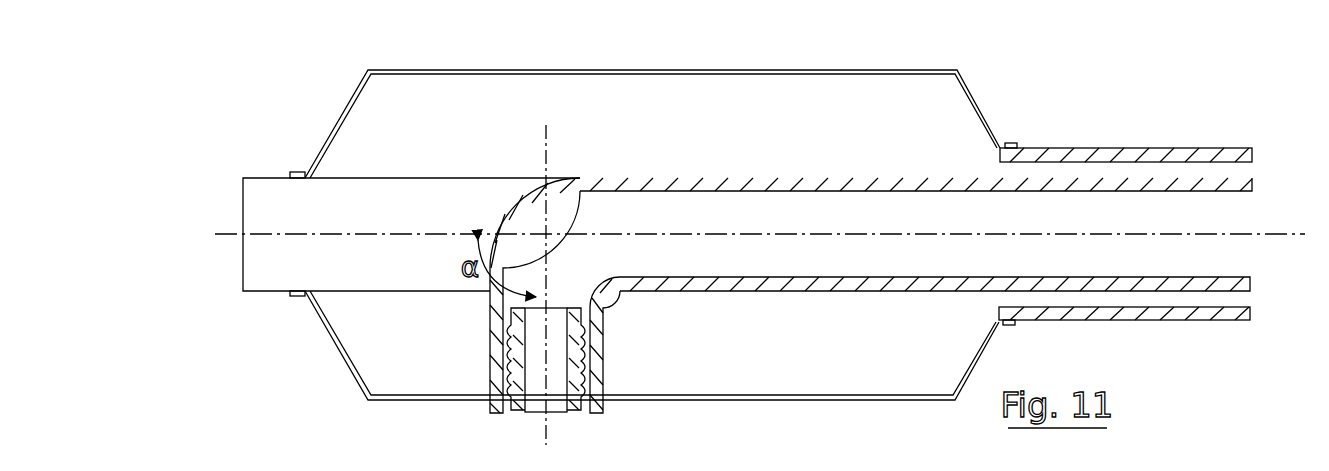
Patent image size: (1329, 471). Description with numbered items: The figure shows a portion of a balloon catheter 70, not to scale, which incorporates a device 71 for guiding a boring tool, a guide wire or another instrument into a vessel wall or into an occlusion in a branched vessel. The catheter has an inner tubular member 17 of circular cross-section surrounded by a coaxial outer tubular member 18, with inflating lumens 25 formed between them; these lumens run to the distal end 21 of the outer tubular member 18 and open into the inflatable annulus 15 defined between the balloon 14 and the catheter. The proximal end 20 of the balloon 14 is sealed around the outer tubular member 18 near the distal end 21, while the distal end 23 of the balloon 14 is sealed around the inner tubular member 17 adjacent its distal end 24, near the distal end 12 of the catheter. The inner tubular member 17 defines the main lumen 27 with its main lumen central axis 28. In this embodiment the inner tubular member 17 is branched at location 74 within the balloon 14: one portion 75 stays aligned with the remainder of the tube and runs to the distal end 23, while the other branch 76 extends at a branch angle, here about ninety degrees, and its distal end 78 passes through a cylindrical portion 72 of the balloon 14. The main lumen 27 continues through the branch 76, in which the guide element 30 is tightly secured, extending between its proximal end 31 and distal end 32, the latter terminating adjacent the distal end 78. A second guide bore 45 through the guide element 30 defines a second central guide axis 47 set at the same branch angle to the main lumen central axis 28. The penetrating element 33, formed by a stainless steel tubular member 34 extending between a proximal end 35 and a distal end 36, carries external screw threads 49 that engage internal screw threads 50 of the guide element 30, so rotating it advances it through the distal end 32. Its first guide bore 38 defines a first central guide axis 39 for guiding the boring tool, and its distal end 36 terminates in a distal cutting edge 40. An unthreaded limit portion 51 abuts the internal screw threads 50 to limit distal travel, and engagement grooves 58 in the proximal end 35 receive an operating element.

The distal end of catheter 12 is at (243, 212).
The inflatable balloon 14 is at (826, 70).
The inflatable annulus 15 is at (876, 95).
The inner tubular member 17 is at (1225, 186).
The outer tubular member 18 is at (1118, 150).
The proximal end of balloon 20 is at (1010, 144).
The distal end of outer tubular member 21 is at (998, 158).
The distal end of balloon 23 is at (299, 172).
The distal end of inner tubular member 24 is at (290, 174).
The inflating lumens 25 is at (1174, 174).
The main lumen 27 is at (1193, 260).
The main lumen central axis 28 is at (1253, 234).
The guide element 30 is at (510, 360).
The proximal end of guide element 31 is at (585, 346).
The distal end of guide element 32 is at (592, 406).
The penetrating element 33 is at (514, 336).
The tubular member of penetrating element 34 is at (584, 324).
The proximal end of penetrating element 35 is at (568, 308).
The distal end of penetrating element 36 is at (546, 413).
The first guide bore 38 is at (553, 308).
The first central guide axis 39 is at (582, 366).
The distal cutting edge 40 is at (518, 414).
The second guide bore 45 is at (510, 414).
The second central guide axis 47 is at (572, 415).
The external screw threads 49 is at (510, 346).
The internal screw threads 50 is at (512, 391).
The unthreaded limit portion 51 is at (590, 321).
The engagement grooves 58 is at (580, 310).
The balloon catheter 70 is at (997, 69).
The device 71 is at (760, 340).
The cylindrical portion of balloon 72 is at (726, 400).
The branch location 74 is at (560, 178).
The aligned portion of inner tubular member 75 is at (398, 178).
The branch of inner tubular member 76 is at (497, 331).
The distal end of branch 78 is at (490, 401).